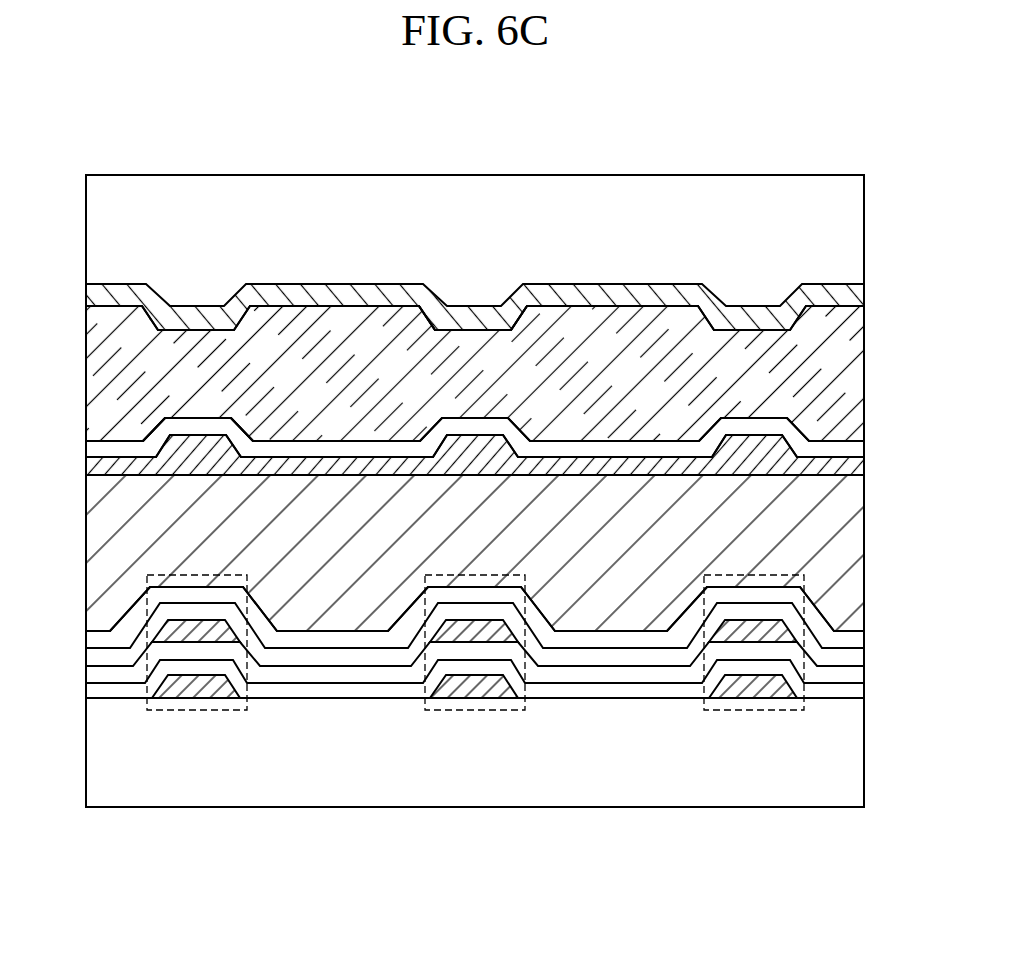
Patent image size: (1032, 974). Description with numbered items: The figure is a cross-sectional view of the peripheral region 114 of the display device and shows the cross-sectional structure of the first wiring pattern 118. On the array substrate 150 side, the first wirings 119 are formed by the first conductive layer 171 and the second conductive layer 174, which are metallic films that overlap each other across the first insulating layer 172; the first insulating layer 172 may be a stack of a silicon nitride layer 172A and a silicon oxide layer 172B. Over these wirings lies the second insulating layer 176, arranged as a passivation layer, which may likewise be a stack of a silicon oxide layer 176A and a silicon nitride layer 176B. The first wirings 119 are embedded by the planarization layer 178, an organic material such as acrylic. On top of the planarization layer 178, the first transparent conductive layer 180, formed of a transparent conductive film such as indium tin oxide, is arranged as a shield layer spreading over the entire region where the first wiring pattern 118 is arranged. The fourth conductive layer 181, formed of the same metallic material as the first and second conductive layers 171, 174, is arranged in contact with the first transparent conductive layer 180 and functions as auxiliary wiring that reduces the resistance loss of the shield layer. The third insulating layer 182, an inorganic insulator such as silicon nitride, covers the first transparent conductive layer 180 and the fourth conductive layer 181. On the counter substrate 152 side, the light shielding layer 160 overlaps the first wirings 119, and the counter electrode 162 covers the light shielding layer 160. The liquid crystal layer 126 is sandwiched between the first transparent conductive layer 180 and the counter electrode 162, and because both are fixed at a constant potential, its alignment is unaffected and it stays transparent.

The peripheral region 114 is at (145, 141).
The first wiring pattern 118 is at (467, 762).
The first wirings 119 is at (732, 912).
The liquid crystal layer 126 is at (92, 372).
The array substrate 150 is at (857, 747).
The counter substrate 152 is at (856, 229).
The light shielding layer 160 is at (482, 300).
The counter electrode 162 is at (652, 300).
The first conductive layer 171 is at (196, 690).
The first insulating layer 172 is at (475, 738).
The silicon nitride layer 172A is at (587, 688).
The silicon oxide layer 172B is at (652, 668).
The second conductive layer 174 is at (483, 640).
The second insulating layer 176 is at (475, 764).
The silicon oxide layer 176A is at (312, 659).
The silicon nitride layer 176B is at (373, 638).
The planarization layer 178 is at (92, 550).
The first transparent conductive layer 180 is at (850, 465).
The fourth conductive layer 181 is at (197, 440).
The third insulating layer 182 is at (92, 449).